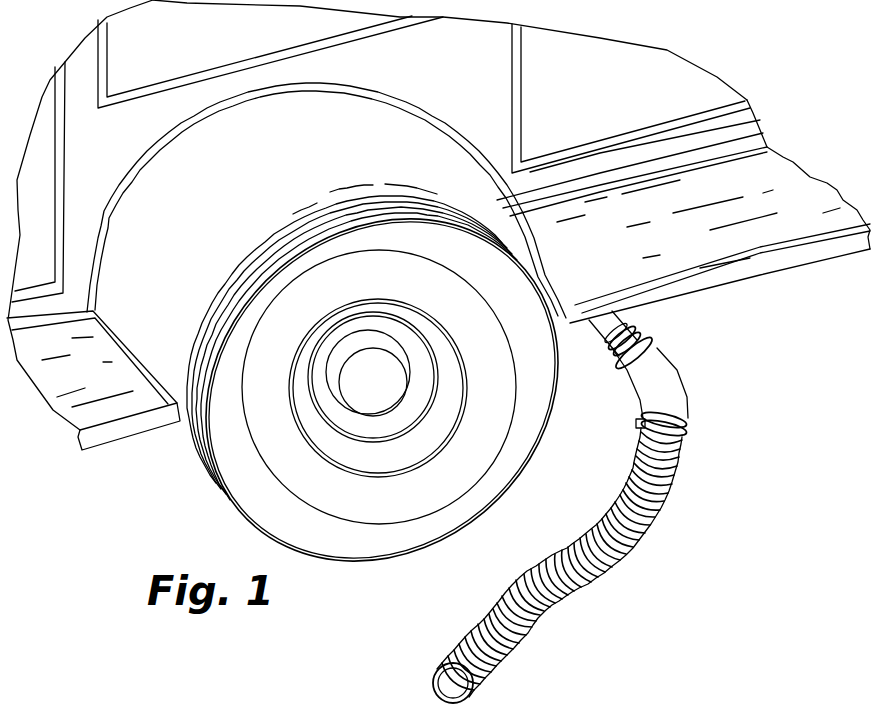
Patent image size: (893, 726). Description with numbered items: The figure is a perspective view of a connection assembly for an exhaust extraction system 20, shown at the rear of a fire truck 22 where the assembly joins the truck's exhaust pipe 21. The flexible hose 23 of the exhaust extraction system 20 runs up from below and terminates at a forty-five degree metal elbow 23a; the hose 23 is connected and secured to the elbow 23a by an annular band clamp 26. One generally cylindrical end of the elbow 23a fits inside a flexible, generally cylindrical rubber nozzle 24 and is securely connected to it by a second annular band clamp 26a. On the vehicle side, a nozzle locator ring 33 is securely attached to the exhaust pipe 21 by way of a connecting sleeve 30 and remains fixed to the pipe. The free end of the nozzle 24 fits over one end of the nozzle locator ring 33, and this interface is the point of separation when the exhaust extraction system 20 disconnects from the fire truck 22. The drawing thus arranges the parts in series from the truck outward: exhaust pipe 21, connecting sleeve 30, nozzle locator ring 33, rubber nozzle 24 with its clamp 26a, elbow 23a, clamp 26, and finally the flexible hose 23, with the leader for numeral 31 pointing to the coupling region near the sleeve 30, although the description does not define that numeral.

The exhaust extraction system 20 is at (613, 506).
The exhaust pipe 21 is at (683, 211).
The fire truck 22 is at (631, 87).
The flexible hose 23 is at (578, 565).
The 45 degree metal elbow 23a is at (688, 383).
The rubber nozzle 24 is at (671, 334).
The annular band clamp 26 is at (697, 430).
The annular band clamp 26a is at (624, 414).
The connecting sleeve 30 is at (600, 333).
The pipe coupling 31 is at (601, 351).
The nozzle locator ring 33 is at (616, 378).